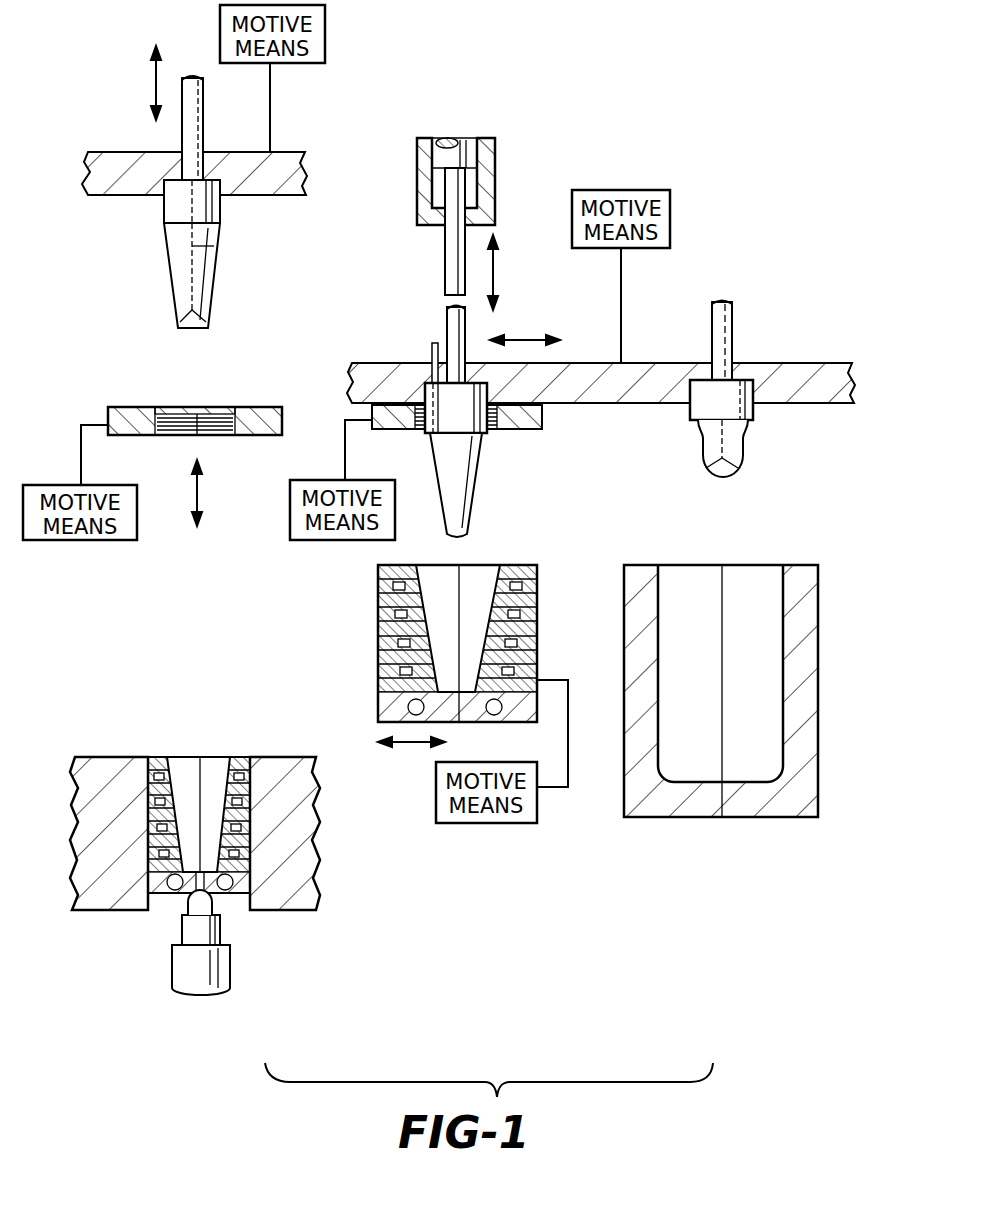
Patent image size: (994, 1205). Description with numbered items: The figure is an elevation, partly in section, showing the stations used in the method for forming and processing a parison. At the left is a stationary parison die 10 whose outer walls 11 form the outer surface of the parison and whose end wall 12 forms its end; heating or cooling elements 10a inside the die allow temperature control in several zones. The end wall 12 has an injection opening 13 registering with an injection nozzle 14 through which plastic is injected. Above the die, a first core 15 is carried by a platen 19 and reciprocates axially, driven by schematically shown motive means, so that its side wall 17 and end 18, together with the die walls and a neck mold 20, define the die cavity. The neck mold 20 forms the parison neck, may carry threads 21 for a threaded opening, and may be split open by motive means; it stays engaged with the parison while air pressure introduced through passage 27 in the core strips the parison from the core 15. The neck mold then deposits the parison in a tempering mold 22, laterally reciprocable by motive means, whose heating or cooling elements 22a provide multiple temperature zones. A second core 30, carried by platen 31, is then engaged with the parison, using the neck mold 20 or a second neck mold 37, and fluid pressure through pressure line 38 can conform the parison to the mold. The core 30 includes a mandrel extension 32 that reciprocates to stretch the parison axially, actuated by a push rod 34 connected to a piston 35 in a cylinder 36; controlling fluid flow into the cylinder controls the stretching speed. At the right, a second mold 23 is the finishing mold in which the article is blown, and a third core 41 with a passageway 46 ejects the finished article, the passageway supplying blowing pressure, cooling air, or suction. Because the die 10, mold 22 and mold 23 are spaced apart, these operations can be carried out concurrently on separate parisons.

The parison die 10 is at (262, 840).
The heating or cooling elements 10a is at (246, 798).
The outer walls 11 is at (223, 783).
The end wall 12 is at (208, 895).
The injection opening 13 is at (182, 896).
The injection nozzle 14 is at (178, 970).
The first core 15 is at (178, 284).
The side wall 17 is at (220, 290).
The end 18 is at (192, 330).
The platen 19 is at (112, 162).
The neck mold 20 is at (150, 407).
The threads 21 is at (170, 437).
The mold 22 is at (378, 690).
The heating or cooling elements 22a is at (380, 668).
The second mold 23 is at (818, 736).
The passage 27 is at (214, 249).
The second core 30 is at (466, 512).
The platen 31 is at (657, 405).
The mandrel extension 32 is at (462, 328).
The push rod 34 is at (445, 256).
The piston 35 is at (455, 138).
The cylinder 36 is at (493, 153).
The second neck mold 37 is at (524, 430).
The pressure line 38 is at (434, 345).
The third core 41 is at (747, 468).
The passageway 46 is at (733, 330).